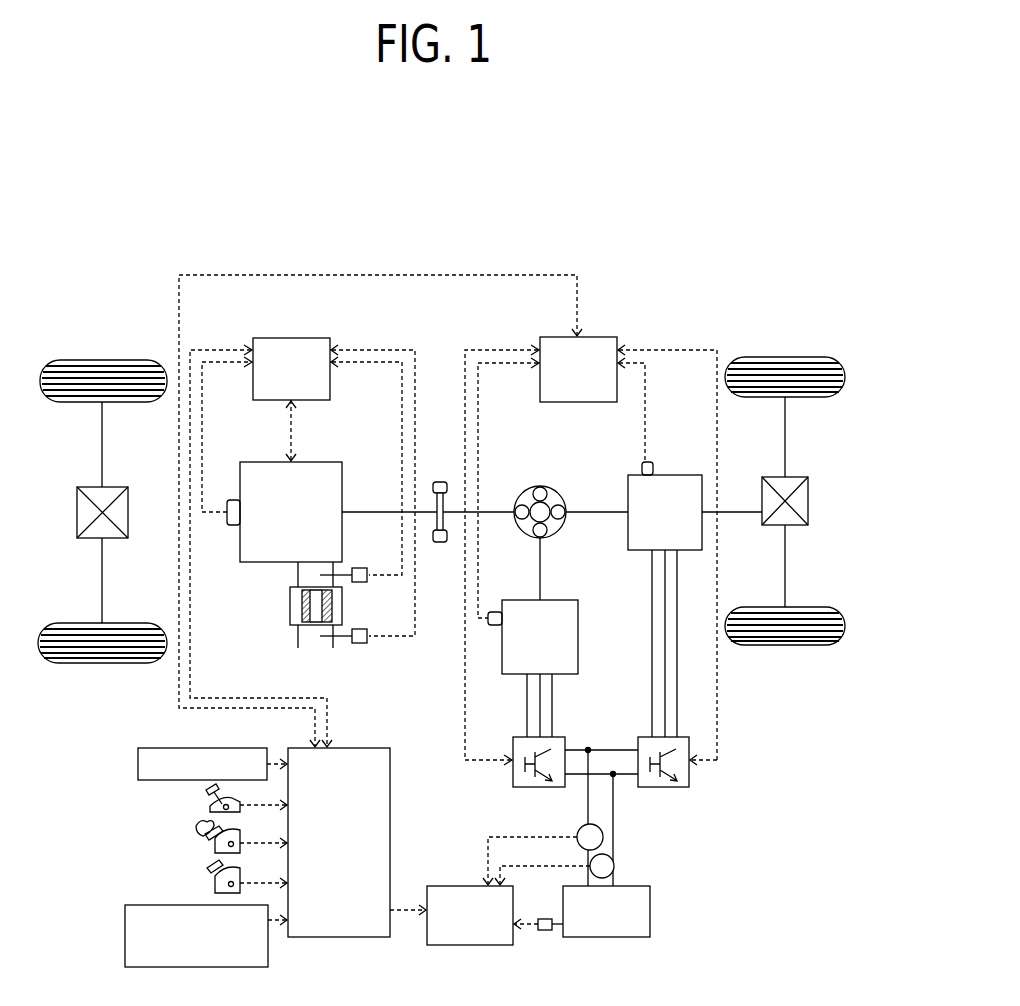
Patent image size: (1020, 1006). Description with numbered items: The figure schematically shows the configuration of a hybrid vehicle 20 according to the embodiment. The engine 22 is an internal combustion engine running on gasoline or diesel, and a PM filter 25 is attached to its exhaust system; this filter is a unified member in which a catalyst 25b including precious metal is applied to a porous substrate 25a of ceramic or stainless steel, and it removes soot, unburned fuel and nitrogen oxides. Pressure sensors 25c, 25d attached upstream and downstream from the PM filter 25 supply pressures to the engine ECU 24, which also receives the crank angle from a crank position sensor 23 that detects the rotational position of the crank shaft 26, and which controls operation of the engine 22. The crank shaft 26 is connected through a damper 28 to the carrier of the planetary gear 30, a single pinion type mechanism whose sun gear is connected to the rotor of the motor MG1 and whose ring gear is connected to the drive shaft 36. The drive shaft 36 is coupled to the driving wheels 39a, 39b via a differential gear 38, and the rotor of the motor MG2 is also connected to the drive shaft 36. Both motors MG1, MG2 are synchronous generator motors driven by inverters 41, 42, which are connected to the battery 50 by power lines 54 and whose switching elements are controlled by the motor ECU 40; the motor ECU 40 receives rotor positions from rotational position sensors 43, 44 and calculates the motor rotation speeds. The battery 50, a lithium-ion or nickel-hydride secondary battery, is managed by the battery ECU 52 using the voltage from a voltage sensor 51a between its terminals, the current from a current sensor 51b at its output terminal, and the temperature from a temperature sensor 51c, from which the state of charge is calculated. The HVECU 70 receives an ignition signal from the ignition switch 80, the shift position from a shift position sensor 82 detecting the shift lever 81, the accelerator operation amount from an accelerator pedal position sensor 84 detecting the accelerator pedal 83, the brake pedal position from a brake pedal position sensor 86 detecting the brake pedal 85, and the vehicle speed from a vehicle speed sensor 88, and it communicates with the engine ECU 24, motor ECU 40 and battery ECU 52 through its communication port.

The hybrid vehicle 20 is at (706, 307).
The engine 22 is at (313, 462).
The crank position sensor 23 is at (233, 500).
The engine ECU 24 is at (286, 336).
The PM filter 25 is at (285, 605).
The porous substrate 25a is at (301, 601).
The catalyst 25b is at (310, 614).
The pressure sensor 25c is at (361, 568).
The pressure sensor 25d is at (358, 645).
The crank shaft 26 is at (360, 511).
The damper 28 is at (438, 481).
The planetary gear 30 is at (538, 486).
The drive shaft 36 is at (738, 505).
The differential gear 38 is at (793, 477).
The driving wheel 39a is at (786, 357).
The driving wheel 39b is at (787, 648).
The motor ECU 40 is at (588, 337).
The inverter 41 is at (558, 737).
The inverter 42 is at (685, 737).
The rotational position sensor 43 is at (495, 612).
The rotational position sensor 44 is at (645, 462).
The battery 50 is at (650, 919).
The voltage sensor 51a is at (614, 867).
The current sensor 51b is at (603, 838).
The temperature sensor 51c is at (548, 935).
The battery ECU 52 is at (464, 884).
The power lines 54 is at (592, 808).
The HVECU 70 is at (360, 746).
The ignition switch 80 is at (138, 762).
The shift lever 81 is at (205, 789).
The shift position sensor 82 is at (212, 806).
The accelerator pedal 83 is at (212, 838).
The accelerator pedal position sensor 84 is at (217, 848).
The brake pedal 85 is at (208, 870).
The brake pedal position sensor 86 is at (216, 890).
The vehicle speed sensor 88 is at (125, 920).
The motor MG1 is at (560, 600).
The motor MG2 is at (683, 475).